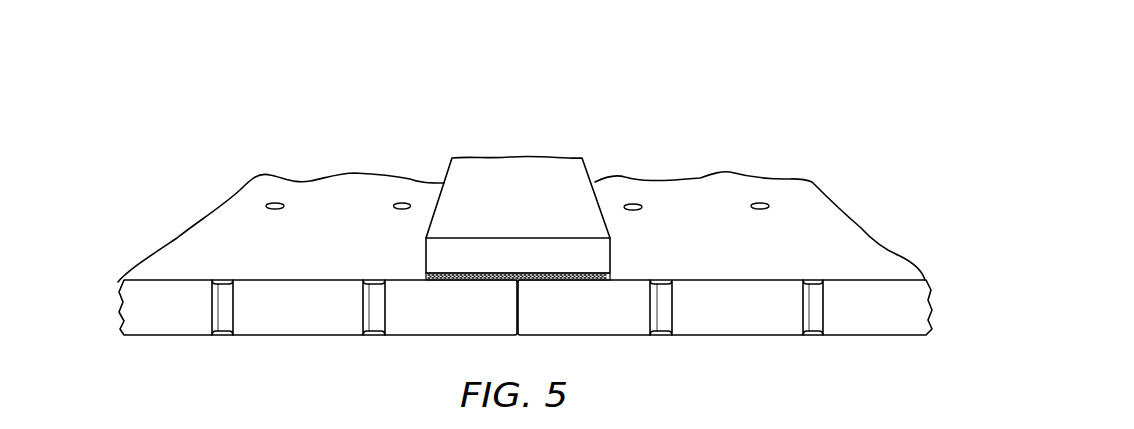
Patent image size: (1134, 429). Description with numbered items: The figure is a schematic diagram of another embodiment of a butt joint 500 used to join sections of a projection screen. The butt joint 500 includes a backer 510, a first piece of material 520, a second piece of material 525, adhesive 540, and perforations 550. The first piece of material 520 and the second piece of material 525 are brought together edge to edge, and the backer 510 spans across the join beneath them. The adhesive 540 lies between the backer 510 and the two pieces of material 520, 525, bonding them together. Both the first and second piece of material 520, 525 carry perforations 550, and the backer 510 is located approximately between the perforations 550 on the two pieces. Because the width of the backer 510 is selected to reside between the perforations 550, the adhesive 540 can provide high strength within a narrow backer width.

The butt joint 500 is at (346, 112).
The backer 510 is at (533, 173).
The first piece of material 520 is at (185, 260).
The second piece of material 525 is at (867, 258).
The adhesive 540 is at (614, 278).
The perforations 550 is at (273, 202).